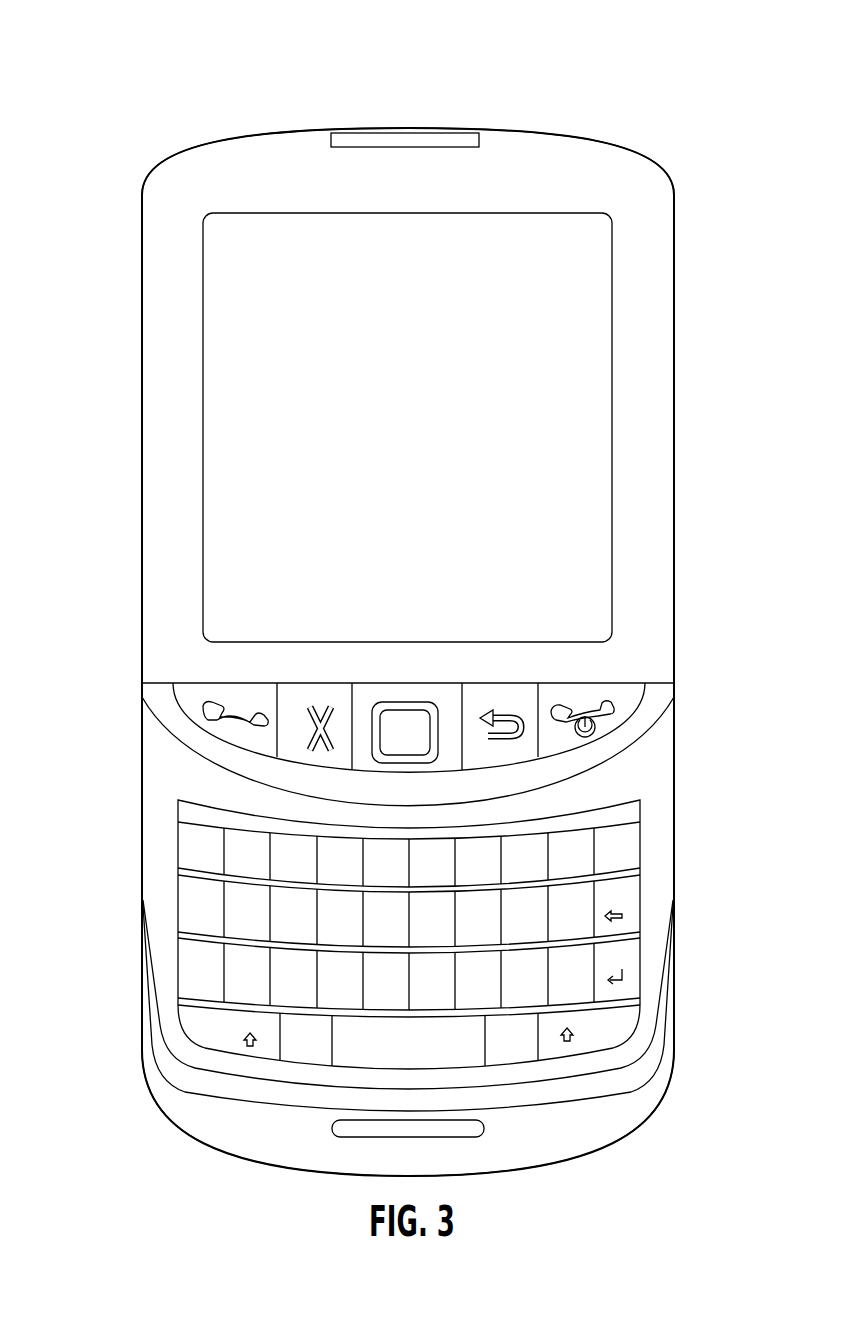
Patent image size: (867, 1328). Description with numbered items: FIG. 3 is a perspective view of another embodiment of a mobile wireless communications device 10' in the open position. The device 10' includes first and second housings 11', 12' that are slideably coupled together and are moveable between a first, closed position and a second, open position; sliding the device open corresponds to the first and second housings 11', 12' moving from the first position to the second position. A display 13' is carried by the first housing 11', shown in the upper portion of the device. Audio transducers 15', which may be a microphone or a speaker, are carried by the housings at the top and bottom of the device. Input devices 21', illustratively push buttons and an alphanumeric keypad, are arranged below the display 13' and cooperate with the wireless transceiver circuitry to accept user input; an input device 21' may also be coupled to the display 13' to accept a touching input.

The mobile wireless communications device 10' is at (407, 588).
The first housing 11' is at (448, 467).
The second housing 12' is at (461, 1012).
The display 13' is at (339, 427).
The audio transducer 15' is at (342, 604).
The input device 21' is at (337, 846).